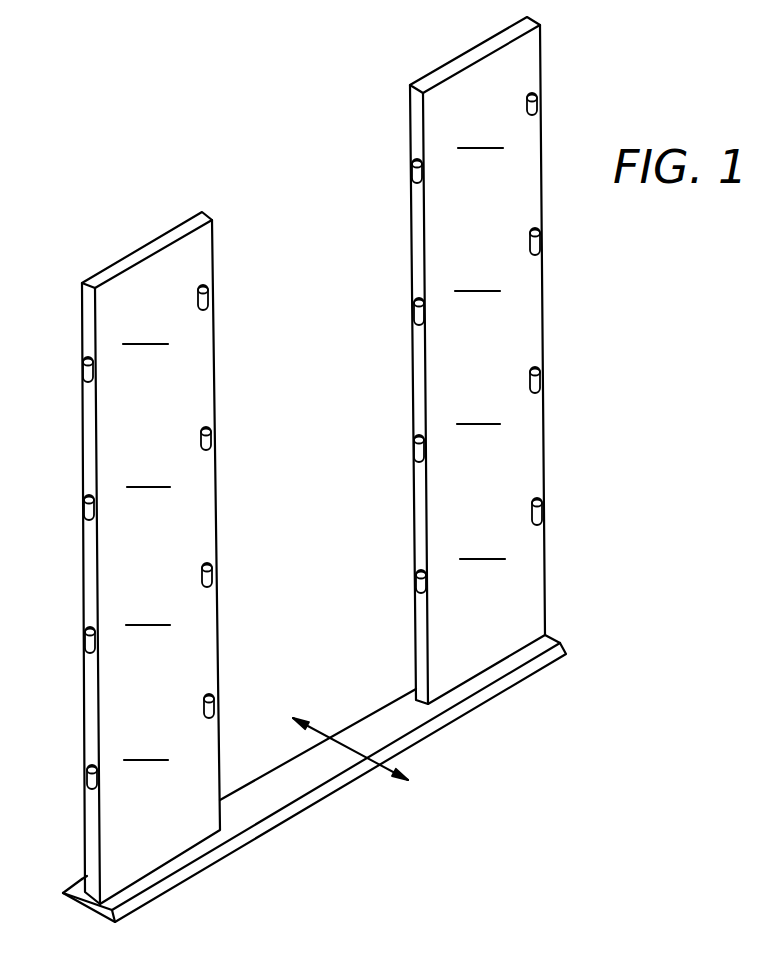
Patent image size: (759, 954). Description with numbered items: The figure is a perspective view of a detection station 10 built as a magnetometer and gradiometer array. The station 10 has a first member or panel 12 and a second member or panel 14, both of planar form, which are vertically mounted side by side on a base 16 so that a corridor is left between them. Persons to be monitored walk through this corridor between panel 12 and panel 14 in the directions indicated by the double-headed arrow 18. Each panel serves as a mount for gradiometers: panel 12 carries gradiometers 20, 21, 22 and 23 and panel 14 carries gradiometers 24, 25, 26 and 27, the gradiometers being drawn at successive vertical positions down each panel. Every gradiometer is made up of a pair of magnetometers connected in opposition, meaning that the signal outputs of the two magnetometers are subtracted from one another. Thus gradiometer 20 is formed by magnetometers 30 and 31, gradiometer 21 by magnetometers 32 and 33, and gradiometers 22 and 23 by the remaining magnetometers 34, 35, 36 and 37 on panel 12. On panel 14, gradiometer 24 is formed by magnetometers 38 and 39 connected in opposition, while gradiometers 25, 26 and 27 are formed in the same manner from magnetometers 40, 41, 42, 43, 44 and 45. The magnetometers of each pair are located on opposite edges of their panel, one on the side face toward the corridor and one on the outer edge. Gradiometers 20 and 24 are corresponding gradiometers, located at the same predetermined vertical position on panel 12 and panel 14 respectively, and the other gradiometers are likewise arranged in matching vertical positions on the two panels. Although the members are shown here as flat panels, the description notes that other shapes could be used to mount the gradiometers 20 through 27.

The station 10 is at (340, 126).
The first member or panel 12 is at (157, 238).
The second member or panel 14 is at (486, 45).
The base 16 is at (346, 787).
The double-headed arrow 18 is at (320, 728).
The gradiometer 20 is at (145, 328).
The gradiometer 21 is at (149, 471).
The gradiometer 22 is at (148, 609).
The gradiometer 23 is at (146, 744).
The gradiometer 24 is at (480, 132).
The gradiometer 25 is at (477, 276).
The gradiometer 26 is at (478, 409).
The gradiometer 27 is at (482, 543).
The magnetometer 30 is at (210, 296).
The magnetometer 31 is at (82, 371).
The magnetometer 32 is at (213, 432).
The magnetometer 33 is at (84, 507).
The magnetometer 34 is at (215, 572).
The magnetometer 35 is at (85, 643).
The magnetometer 36 is at (218, 704).
The magnetometer 37 is at (87, 778).
The magnetometer 38 is at (411, 176).
The magnetometer 39 is at (540, 102).
The magnetometer 40 is at (413, 318).
The magnetometer 41 is at (542, 237).
The magnetometer 42 is at (413, 450).
The magnetometer 43 is at (542, 377).
The magnetometer 44 is at (415, 580).
The magnetometer 45 is at (543, 508).